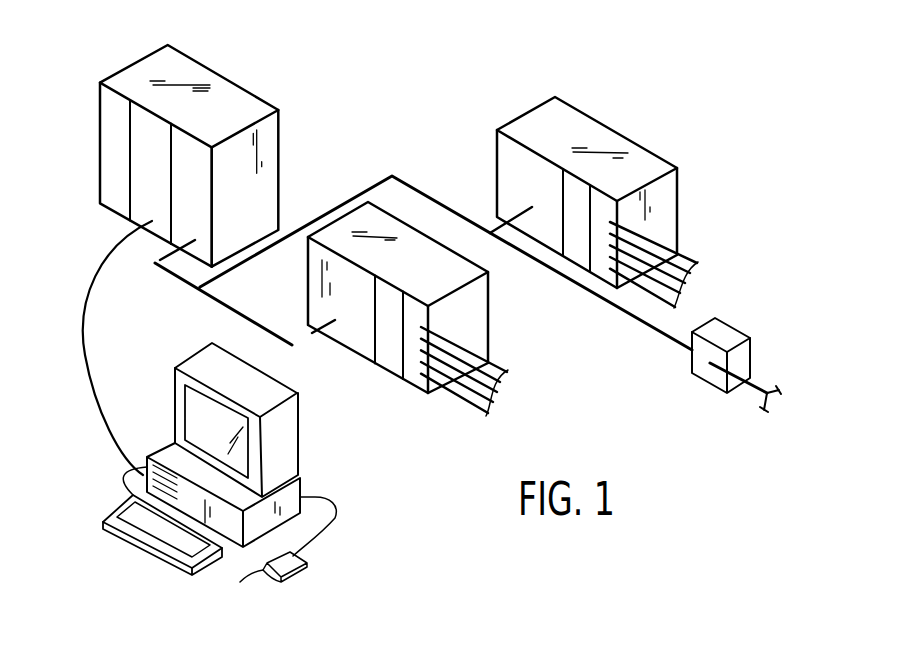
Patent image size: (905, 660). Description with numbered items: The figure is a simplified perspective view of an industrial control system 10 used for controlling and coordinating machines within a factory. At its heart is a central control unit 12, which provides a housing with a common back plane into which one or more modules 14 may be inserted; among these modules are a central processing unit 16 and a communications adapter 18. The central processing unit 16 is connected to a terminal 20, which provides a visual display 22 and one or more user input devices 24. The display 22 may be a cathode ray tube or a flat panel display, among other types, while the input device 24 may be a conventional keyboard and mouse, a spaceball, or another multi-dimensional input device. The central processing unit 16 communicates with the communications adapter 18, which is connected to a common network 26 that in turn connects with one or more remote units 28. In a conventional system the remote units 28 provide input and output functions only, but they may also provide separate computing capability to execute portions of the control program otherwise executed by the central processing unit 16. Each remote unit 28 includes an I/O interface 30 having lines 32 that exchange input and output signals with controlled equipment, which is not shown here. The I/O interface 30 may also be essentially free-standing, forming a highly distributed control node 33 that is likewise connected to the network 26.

The industrial control system 10 is at (422, 108).
The central control unit 12 is at (233, 95).
The modules 14 is at (188, 193).
The central processing unit 16 is at (140, 210).
The communications adapter 18 is at (200, 212).
The terminal 20 is at (248, 479).
The visual display 22 is at (218, 417).
The user input device 24 is at (190, 553).
The common network 26 is at (417, 187).
The remote units 28 is at (463, 280).
The I/O interface 30 is at (420, 382).
The lines 32 is at (497, 367).
The distributed control node 33 is at (723, 335).